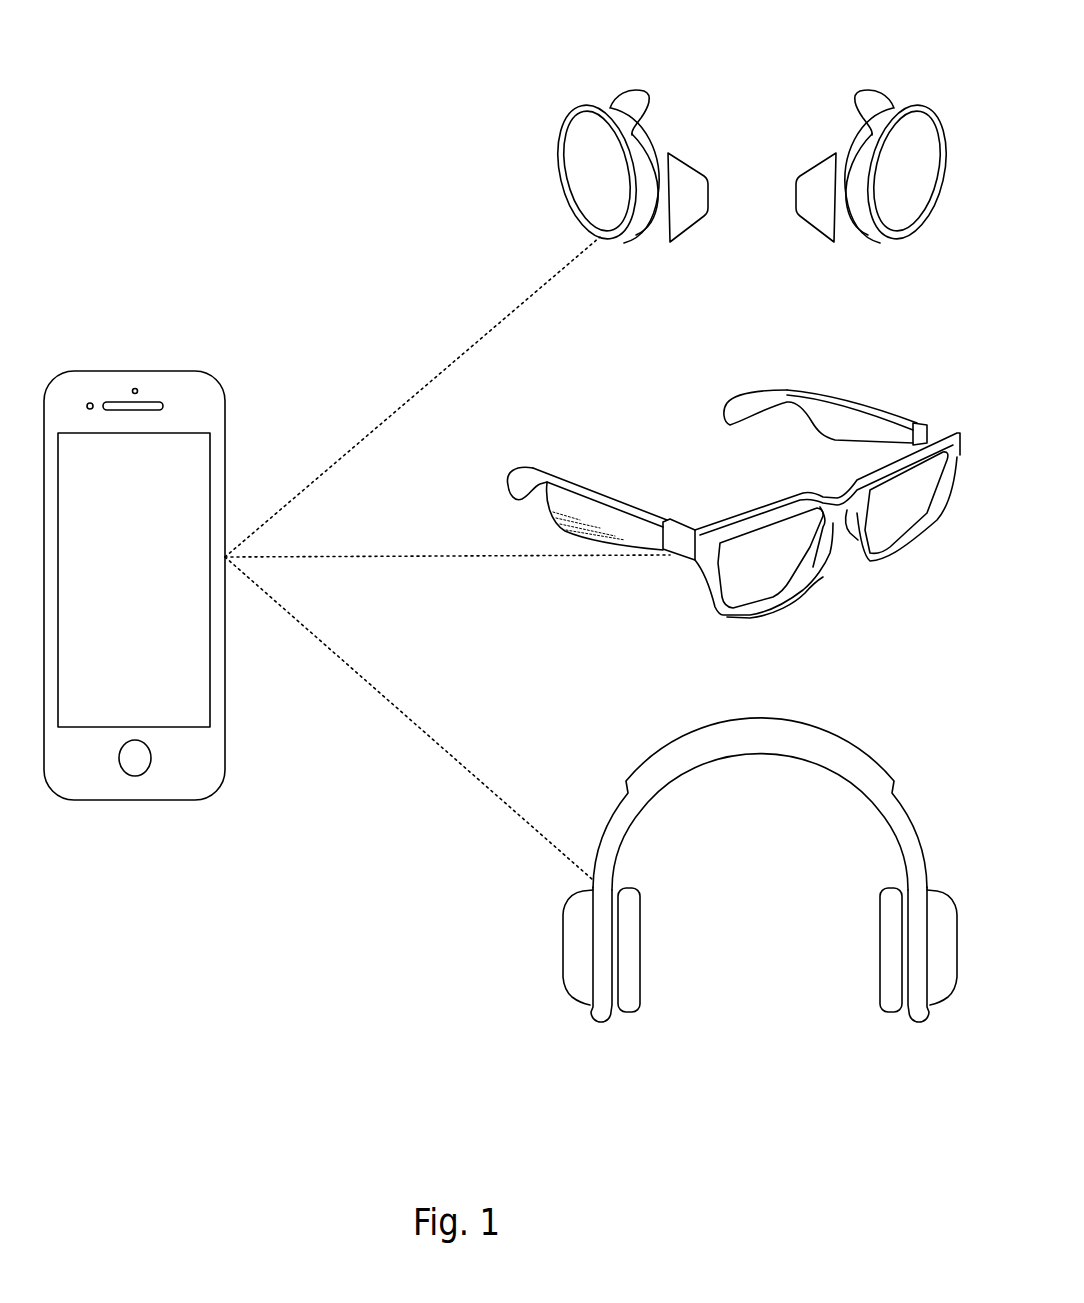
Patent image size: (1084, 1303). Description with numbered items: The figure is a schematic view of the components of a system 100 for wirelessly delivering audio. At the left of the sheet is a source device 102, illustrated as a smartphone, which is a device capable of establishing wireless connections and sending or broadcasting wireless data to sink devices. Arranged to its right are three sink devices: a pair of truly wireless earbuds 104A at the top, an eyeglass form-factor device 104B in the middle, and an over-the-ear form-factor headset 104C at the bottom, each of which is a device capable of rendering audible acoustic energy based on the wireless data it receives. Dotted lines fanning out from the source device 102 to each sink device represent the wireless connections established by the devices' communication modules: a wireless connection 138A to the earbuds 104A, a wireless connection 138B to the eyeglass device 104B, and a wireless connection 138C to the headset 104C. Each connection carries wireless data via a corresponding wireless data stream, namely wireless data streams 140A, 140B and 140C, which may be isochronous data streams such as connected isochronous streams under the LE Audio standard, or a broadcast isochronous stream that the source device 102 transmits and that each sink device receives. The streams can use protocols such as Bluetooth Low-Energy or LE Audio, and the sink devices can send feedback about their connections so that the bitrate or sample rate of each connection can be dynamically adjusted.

The system 100 is at (273, 166).
The source device 102 is at (177, 370).
The pair of truly wireless earbuds 104A is at (763, 86).
The eyeglass form-factor device 104B is at (780, 390).
The over-the-ear form-factor headset 104C is at (675, 738).
The wireless connection 138A is at (412, 397).
The wireless data stream 140A is at (437, 380).
The wireless connection 138B is at (447, 527).
The wireless data stream 140B is at (453, 556).
The wireless connection 138C is at (409, 718).
The wireless data stream 140C is at (438, 743).